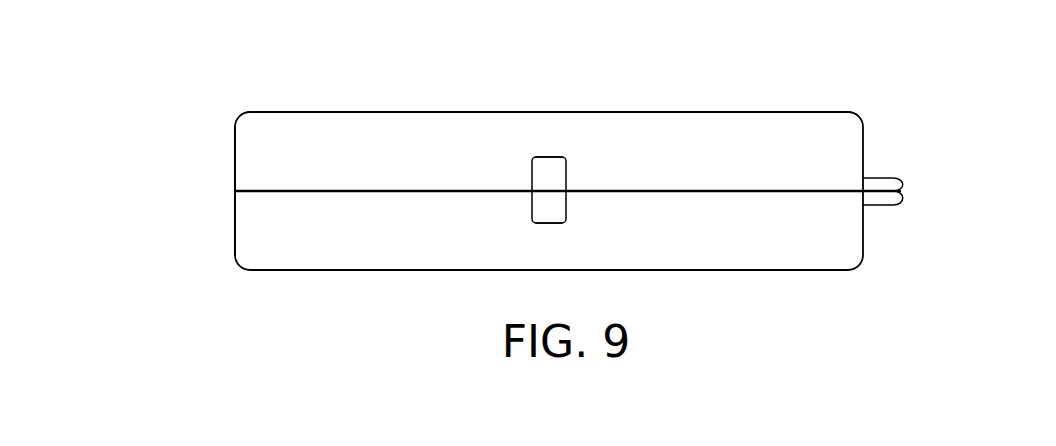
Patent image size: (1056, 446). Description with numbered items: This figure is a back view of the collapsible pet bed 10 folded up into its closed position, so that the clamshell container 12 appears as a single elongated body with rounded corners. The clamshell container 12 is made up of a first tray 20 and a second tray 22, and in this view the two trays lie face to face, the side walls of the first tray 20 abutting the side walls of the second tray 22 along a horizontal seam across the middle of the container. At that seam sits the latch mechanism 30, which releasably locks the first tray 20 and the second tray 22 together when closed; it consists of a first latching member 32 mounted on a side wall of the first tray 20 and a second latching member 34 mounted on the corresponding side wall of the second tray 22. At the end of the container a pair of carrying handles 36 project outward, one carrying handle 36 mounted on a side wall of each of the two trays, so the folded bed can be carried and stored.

The collapsible pet bed 10 is at (701, 69).
The clamshell container 12 is at (331, 133).
The first tray 20 is at (270, 214).
The second tray 22 is at (258, 160).
The latch mechanism 30 is at (504, 166).
The first latching member 32 is at (555, 208).
The second latching member 34 is at (555, 175).
The carrying handle 36 is at (895, 181).